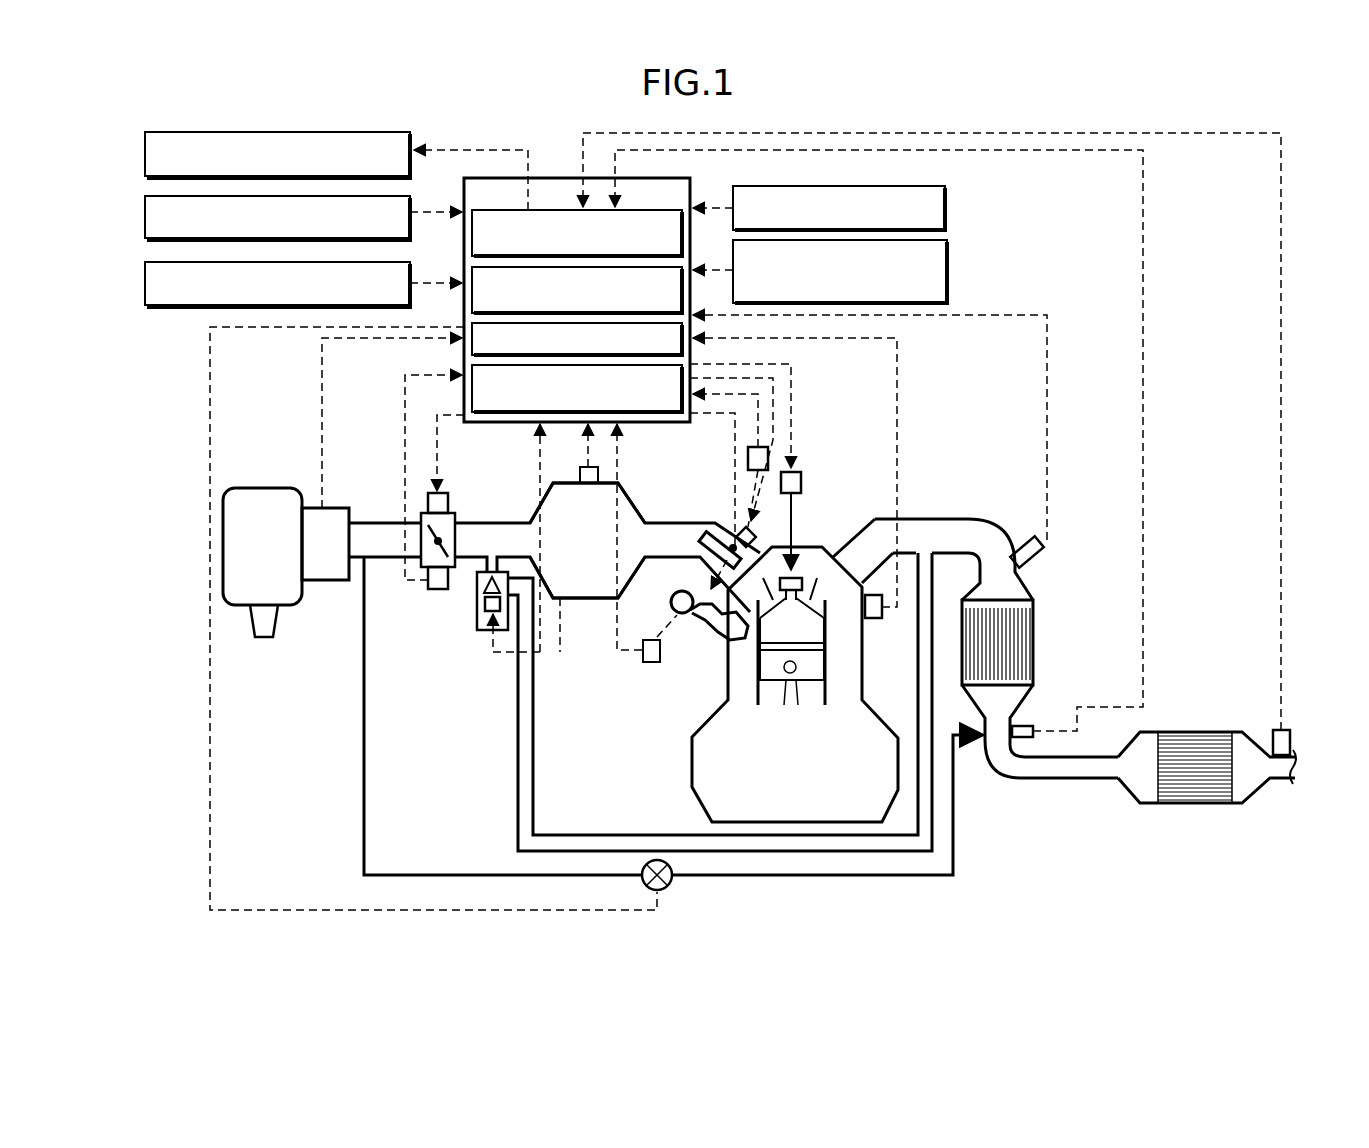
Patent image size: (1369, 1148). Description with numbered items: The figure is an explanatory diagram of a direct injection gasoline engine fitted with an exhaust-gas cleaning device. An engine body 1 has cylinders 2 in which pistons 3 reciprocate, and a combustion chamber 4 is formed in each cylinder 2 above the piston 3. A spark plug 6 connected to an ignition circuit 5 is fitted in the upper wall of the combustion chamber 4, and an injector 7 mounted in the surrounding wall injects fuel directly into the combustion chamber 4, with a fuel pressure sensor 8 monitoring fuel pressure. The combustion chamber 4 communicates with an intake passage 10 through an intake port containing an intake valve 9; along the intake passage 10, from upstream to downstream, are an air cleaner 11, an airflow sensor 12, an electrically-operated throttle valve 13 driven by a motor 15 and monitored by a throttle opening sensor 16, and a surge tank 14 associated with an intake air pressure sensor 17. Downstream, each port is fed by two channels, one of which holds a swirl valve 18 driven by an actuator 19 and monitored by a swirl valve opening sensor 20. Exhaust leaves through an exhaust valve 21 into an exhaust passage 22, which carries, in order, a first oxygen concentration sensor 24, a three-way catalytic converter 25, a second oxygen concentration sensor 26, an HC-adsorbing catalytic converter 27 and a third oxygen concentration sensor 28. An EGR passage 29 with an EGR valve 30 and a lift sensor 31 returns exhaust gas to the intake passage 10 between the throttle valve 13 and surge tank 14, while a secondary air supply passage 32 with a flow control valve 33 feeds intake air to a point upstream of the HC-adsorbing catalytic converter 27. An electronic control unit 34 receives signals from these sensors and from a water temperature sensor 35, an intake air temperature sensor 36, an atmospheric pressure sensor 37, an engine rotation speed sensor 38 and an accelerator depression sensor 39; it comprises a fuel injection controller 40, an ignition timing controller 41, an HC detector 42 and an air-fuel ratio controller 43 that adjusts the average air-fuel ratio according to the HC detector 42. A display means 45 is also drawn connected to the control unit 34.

The engine body 1 is at (688, 775).
The cylinder 2 is at (765, 688).
The piston 3 is at (800, 690).
The combustion chamber 4 is at (828, 645).
The ignition circuit 5 is at (801, 482).
The spark plug 6 is at (800, 578).
The injector 7 is at (690, 620).
The fuel pressure sensor 8 is at (648, 662).
The intake valve 9 is at (762, 652).
The intake passage 10 is at (494, 522).
The air cleaner 11 is at (262, 488).
The airflow sensor 12 is at (335, 580).
The electrically-operated throttle valve 13 is at (452, 570).
The surge tank 14 is at (585, 598).
The motor 15 is at (448, 500).
The throttle opening sensor 16 is at (428, 585).
The intake air pressure sensor 17 is at (600, 475).
The swirl valve 18 is at (713, 540).
The actuator 19 is at (742, 530).
The swirl valve opening sensor 20 is at (748, 456).
The exhaust valve 21 is at (832, 560).
The exhaust passage 22 is at (938, 520).
The first oxygen concentration sensor 24 is at (1045, 560).
The three-way catalytic converter 25 is at (1035, 640).
The second oxygen concentration sensor 26 is at (1030, 724).
The HC-adsorbing catalytic converter 27 is at (1196, 803).
The third oxygen concentration sensor 28 is at (1285, 730).
The EGR passage 29 is at (600, 848).
The EGR valve 30 is at (480, 630).
The lift sensor 31 is at (505, 637).
The secondary air supply passage 32 is at (366, 770).
The flow control valve 33 is at (672, 885).
The electronic control unit 34 is at (585, 290).
The water temperature sensor 35 is at (872, 618).
The intake air temperature sensor 36 is at (145, 211).
The atmospheric pressure sensor 37 is at (145, 285).
The engine rotation speed sensor 38 is at (947, 206).
The accelerator depression sensor 39 is at (949, 270).
The fuel injection controller 40 is at (478, 212).
The ignition timing controller 41 is at (478, 269).
The HC detector 42 is at (478, 326).
The air-fuel ratio controller 43 is at (478, 395).
The display means 45 is at (145, 152).